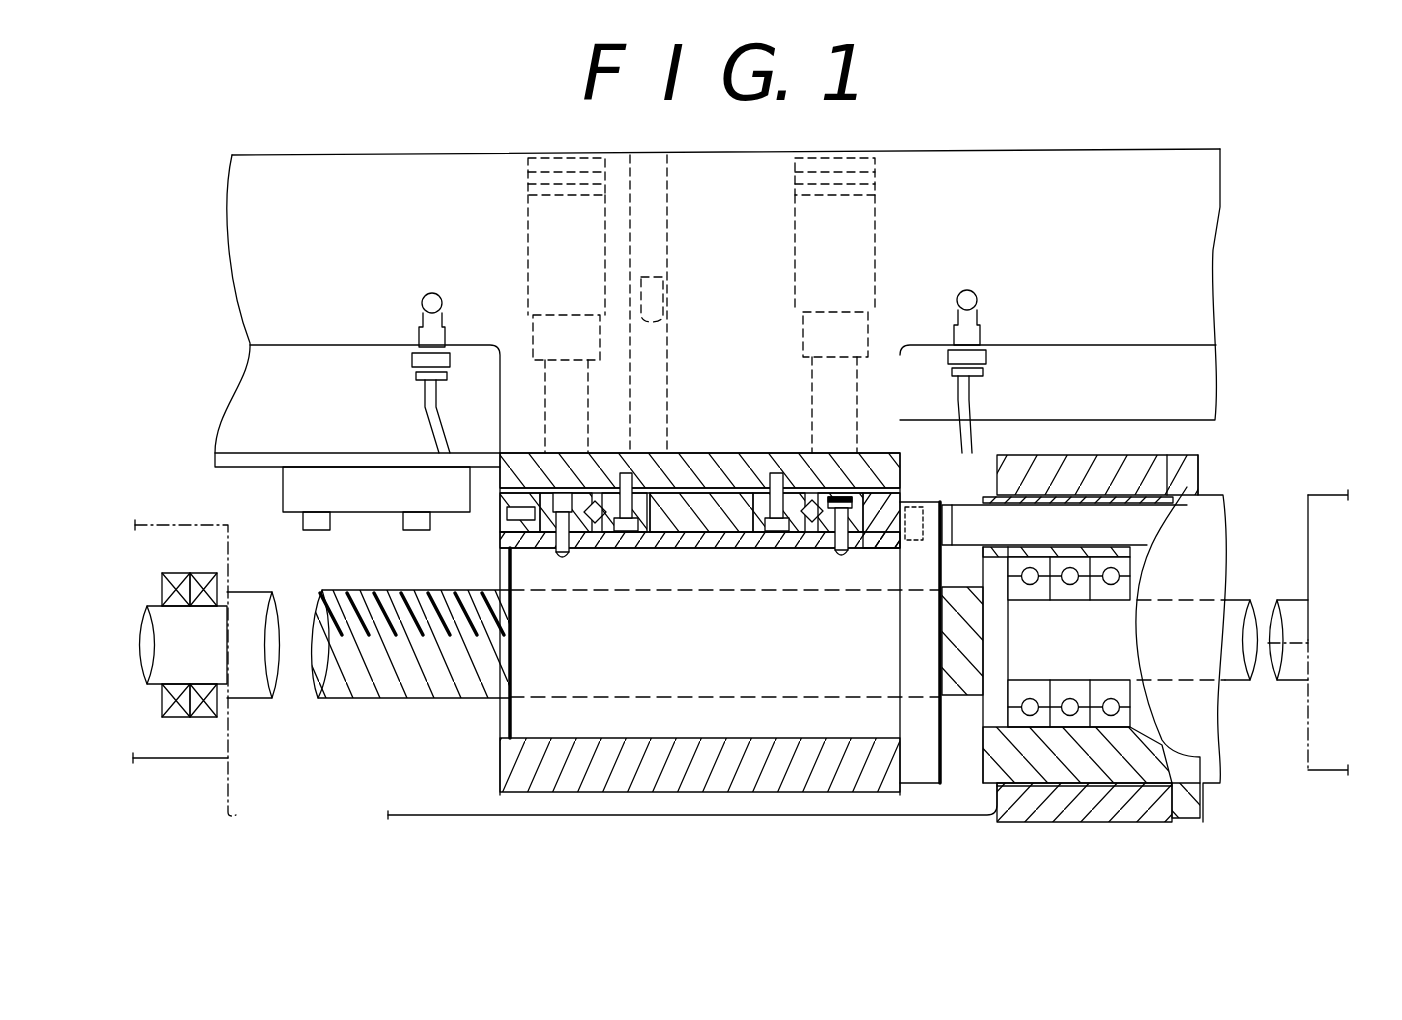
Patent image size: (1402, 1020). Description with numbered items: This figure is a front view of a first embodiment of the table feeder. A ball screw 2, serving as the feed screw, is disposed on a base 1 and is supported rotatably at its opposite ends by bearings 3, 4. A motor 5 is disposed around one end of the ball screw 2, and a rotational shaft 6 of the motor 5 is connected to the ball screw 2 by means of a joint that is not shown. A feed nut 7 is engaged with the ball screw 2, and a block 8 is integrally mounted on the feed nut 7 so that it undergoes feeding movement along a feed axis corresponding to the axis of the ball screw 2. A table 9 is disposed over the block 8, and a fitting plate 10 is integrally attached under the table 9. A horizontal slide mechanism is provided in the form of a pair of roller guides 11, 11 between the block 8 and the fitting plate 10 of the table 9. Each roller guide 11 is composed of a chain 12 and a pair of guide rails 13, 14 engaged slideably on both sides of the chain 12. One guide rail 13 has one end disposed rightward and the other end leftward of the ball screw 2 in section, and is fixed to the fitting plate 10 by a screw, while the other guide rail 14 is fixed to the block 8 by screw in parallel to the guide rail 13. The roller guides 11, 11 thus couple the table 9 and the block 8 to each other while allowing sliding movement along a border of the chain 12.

The base 1 is at (447, 817).
The ball screw 2 is at (380, 700).
The bearing 3 is at (1065, 740).
The bearing 4 is at (178, 717).
The motor 5 is at (1318, 770).
The rotational shaft 6 is at (1292, 676).
The feed nut 7 is at (652, 730).
The block 8 is at (766, 780).
The table 9 is at (989, 224).
The fitting plate 10 is at (903, 480).
The roller guide 11 is at (588, 548).
The chain 12 is at (600, 487).
The guide rail 13 is at (660, 500).
The guide rail 14 is at (545, 497).